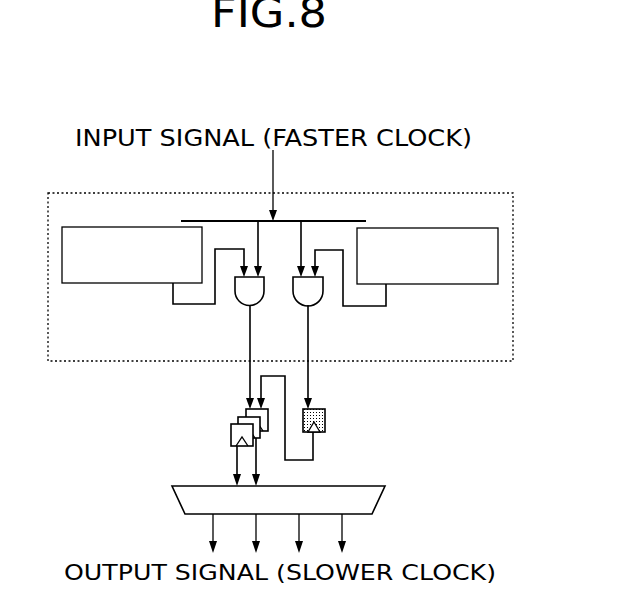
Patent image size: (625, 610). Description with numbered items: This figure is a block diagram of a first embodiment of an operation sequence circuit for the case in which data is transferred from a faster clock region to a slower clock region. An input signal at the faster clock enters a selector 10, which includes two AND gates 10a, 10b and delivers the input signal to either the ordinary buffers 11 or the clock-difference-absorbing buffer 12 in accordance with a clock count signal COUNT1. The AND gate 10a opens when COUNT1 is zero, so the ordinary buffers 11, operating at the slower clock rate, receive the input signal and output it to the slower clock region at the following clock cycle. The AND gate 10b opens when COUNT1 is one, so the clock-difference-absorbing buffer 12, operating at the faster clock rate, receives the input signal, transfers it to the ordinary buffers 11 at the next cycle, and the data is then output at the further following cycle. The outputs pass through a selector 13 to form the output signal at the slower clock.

The selector 10 is at (311, 277).
The AND gate 10a is at (237, 304).
The AND gate 10b is at (321, 298).
The buffers 11 is at (231, 436).
The clock-difference-absorbing buffer 12 is at (325, 421).
The selector 13 is at (381, 497).